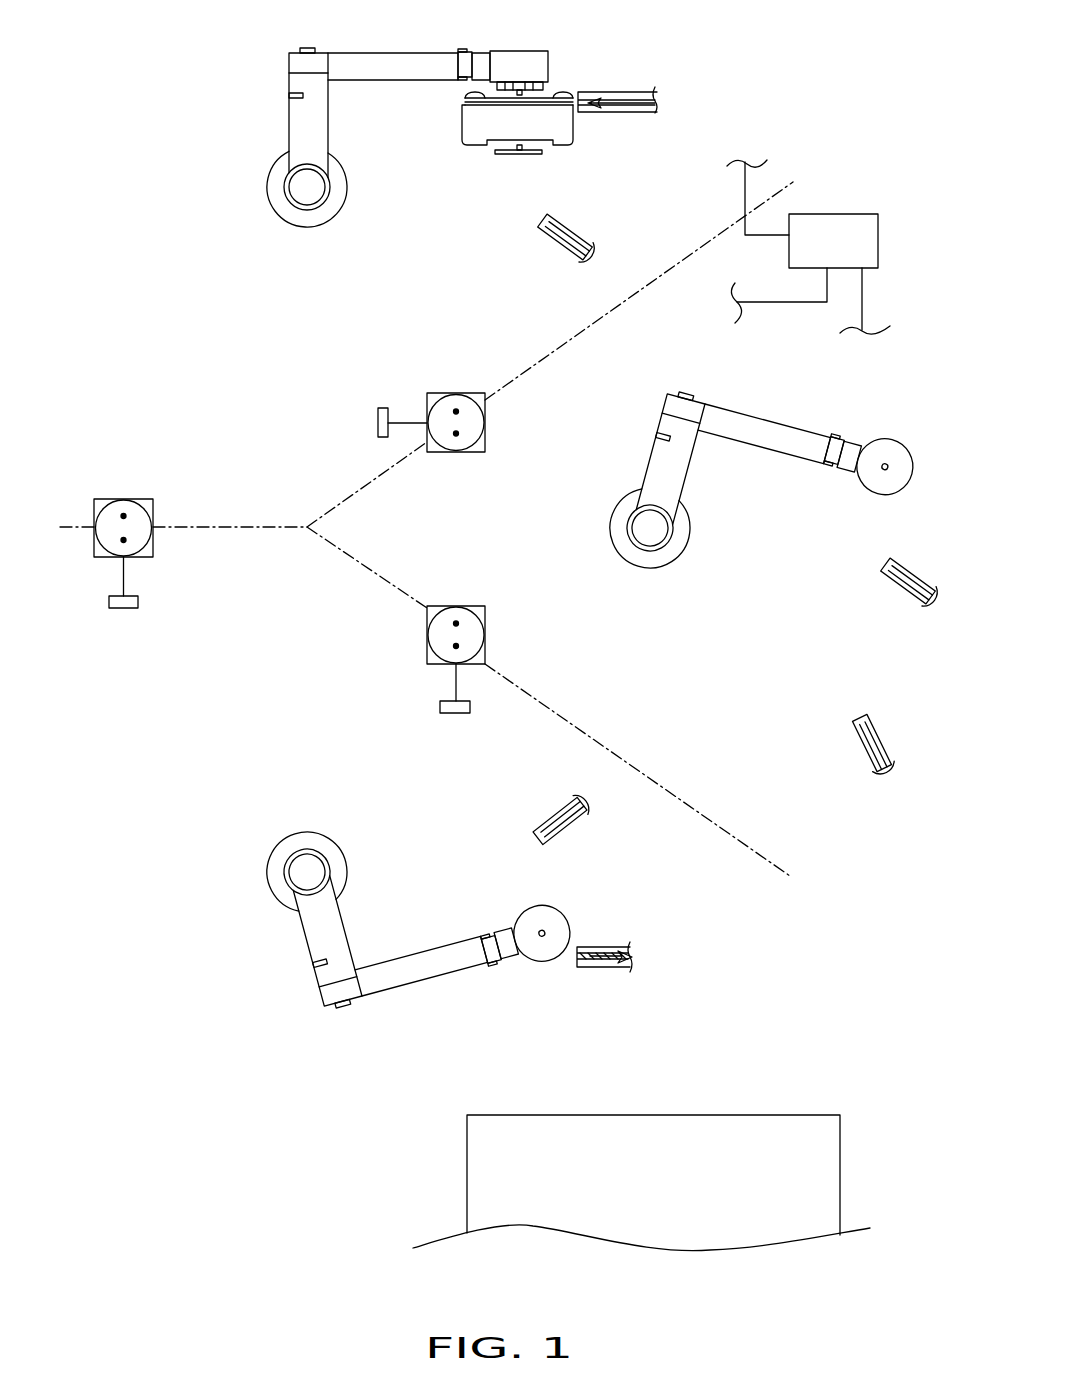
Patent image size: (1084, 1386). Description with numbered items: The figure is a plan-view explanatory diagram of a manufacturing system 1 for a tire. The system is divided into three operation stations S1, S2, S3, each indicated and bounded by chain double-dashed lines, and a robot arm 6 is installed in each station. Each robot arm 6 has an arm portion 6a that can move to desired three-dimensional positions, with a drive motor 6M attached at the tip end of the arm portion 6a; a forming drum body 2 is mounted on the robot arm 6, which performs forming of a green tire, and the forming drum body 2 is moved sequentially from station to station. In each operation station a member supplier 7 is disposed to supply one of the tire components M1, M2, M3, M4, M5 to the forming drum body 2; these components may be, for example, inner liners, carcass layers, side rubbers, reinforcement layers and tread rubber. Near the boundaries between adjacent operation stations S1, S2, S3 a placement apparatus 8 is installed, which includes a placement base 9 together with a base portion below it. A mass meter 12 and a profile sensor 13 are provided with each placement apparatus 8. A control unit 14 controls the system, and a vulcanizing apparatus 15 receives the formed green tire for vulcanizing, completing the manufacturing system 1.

The manufacturing system 1 is at (698, 145).
The forming drum body 2 is at (462, 150).
The robot arm 6 is at (362, 122).
The arm portion 6a is at (398, 74).
The drive motor 6M is at (543, 63).
The member supplier 7 is at (719, 535).
The placement apparatus 8 is at (428, 393).
The placement base 9 is at (456, 403).
The mass meter 12 is at (485, 442).
The profile sensor 13 is at (377, 423).
The control unit 14 is at (850, 222).
The vulcanizing apparatus 15 is at (760, 1120).
The tire component M1 is at (618, 92).
The tire component M2 is at (560, 218).
The tire component M3 is at (907, 573).
The tire component M4 is at (877, 730).
The tire component M5 is at (553, 817).
The operation station S1 is at (235, 280).
The operation station S2 is at (664, 651).
The operation station S3 is at (260, 787).